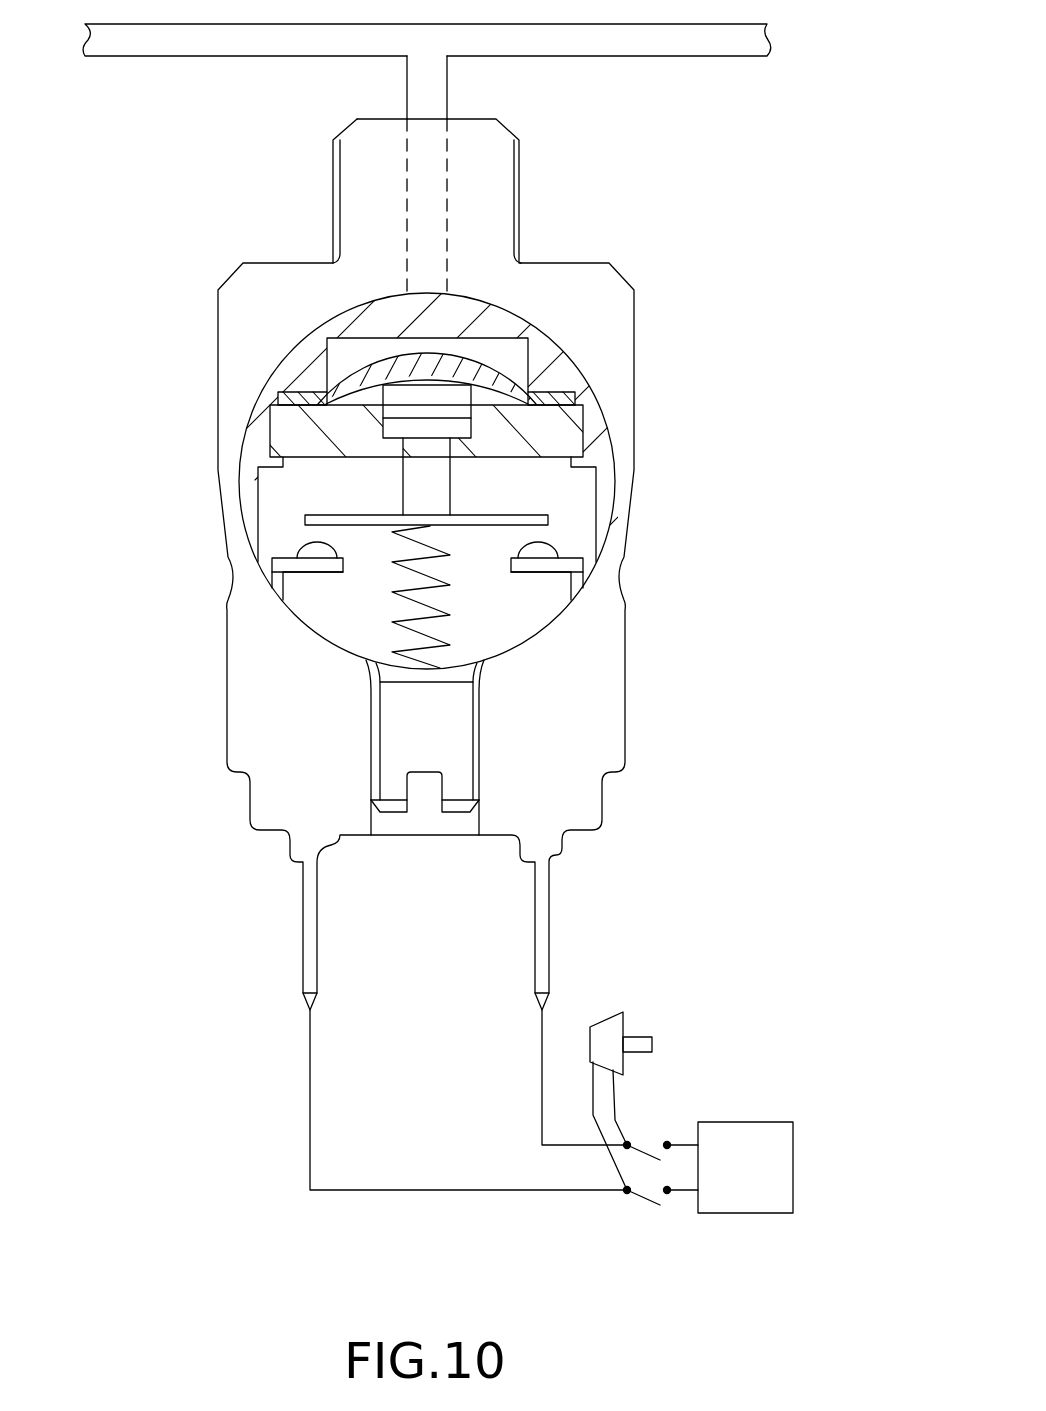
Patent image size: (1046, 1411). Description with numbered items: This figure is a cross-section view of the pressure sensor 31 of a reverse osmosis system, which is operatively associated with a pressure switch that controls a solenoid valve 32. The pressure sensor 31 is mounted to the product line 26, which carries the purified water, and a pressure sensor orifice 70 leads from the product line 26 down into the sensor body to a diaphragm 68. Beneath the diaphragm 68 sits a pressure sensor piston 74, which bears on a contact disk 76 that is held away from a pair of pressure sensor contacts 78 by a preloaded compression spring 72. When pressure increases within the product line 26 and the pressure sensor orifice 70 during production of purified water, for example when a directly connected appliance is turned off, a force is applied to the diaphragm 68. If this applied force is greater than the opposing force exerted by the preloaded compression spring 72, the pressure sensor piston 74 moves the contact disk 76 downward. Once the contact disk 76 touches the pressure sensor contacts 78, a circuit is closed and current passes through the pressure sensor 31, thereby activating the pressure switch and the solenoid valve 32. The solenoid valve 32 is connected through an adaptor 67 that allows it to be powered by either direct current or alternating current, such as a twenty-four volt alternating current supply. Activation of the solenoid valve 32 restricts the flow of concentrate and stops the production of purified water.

The product line 26 is at (698, 47).
The pressure sensor 31 is at (203, 920).
The pressure sensor orifice 70 is at (440, 216).
The diaphragm 68 is at (483, 368).
The pressure sensor piston 74 is at (400, 392).
The contact disk 76 is at (303, 516).
The pressure sensor contacts 78 is at (300, 553).
The preloaded compression spring 72 is at (450, 615).
The adaptor 67 is at (607, 1012).
The solenoid valve 32 is at (745, 1167).